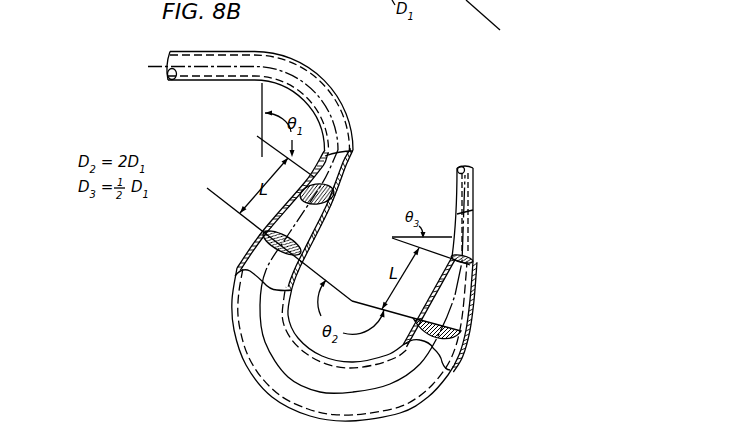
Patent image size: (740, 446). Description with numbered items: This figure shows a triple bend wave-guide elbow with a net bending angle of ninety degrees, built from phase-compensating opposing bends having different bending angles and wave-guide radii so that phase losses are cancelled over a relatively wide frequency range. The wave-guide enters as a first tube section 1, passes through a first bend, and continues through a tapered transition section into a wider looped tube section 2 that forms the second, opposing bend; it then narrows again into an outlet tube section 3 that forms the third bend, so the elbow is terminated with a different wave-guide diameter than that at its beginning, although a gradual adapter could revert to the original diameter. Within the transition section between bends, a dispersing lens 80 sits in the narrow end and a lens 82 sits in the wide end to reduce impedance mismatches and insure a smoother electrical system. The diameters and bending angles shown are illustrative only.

The dispersing lens 80 is at (335, 191).
The lens 82 is at (299, 247).
The first tube section of diameter D1 1 is at (222, 76).
The looped tube section of diameter D2 2 is at (353, 413).
The outlet tube section of diameter D3 3 is at (461, 197).